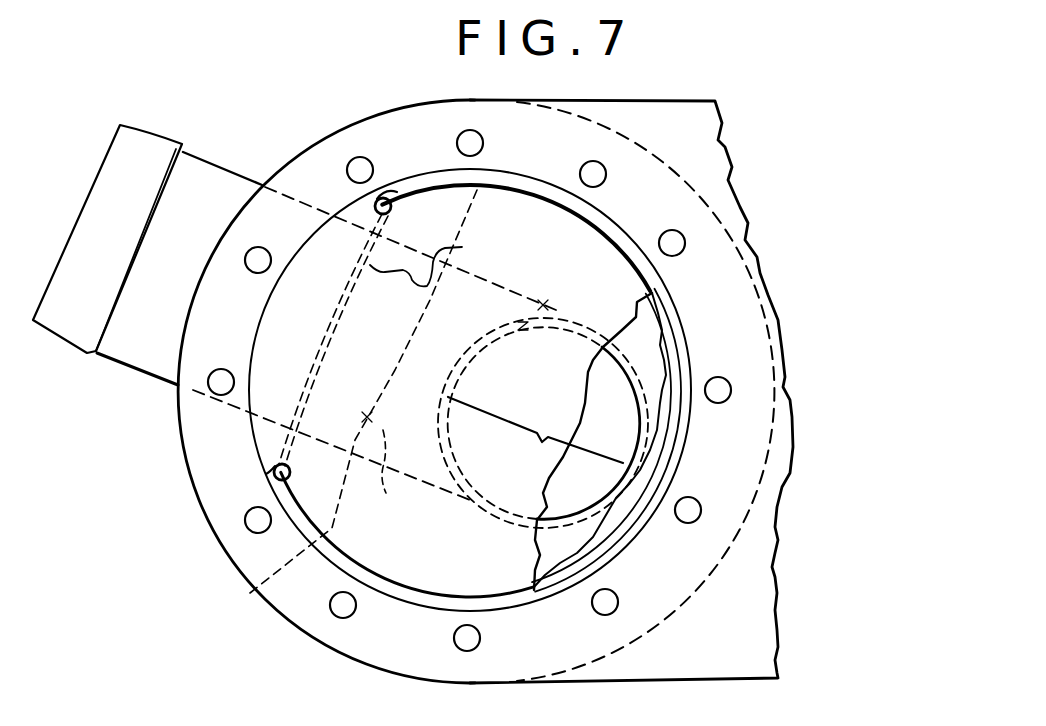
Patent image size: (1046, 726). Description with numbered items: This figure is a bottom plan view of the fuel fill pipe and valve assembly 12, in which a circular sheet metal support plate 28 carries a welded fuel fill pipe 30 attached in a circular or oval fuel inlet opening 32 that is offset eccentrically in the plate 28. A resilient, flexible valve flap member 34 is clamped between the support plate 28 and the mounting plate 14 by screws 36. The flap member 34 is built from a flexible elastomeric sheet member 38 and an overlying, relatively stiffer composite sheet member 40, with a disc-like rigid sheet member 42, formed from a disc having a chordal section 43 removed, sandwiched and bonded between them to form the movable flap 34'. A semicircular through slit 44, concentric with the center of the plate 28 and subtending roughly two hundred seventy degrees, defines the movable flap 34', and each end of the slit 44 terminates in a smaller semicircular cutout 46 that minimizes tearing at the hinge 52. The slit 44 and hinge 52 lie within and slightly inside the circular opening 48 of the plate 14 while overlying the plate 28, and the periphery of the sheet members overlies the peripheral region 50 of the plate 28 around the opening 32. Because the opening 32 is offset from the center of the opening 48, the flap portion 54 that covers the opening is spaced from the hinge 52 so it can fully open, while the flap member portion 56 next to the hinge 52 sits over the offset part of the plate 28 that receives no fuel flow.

The fuel fill pipe and valve assembly 12 is at (186, 534).
The plate 14 is at (752, 568).
The support plate 28 is at (757, 236).
The fuel fill pipe 30 is at (165, 381).
The fuel inlet opening 32 is at (545, 303).
The valve flap member 34 is at (374, 343).
The movable flap 34' is at (585, 441).
The screws 36 is at (257, 273).
The elastomeric sheet member 38 is at (250, 593).
The composite sheet member 40 is at (377, 558).
The rigid sheet member 42 is at (408, 336).
The chordal section 43 is at (386, 492).
The semicircular through slit 44 is at (480, 600).
The semicircular cutout 46 is at (396, 206).
The circular opening 48 is at (618, 550).
The peripheral region 50 is at (640, 380).
The hinge 52 is at (350, 287).
The flap portion 54 is at (535, 435).
The flap member portion 56 is at (434, 257).